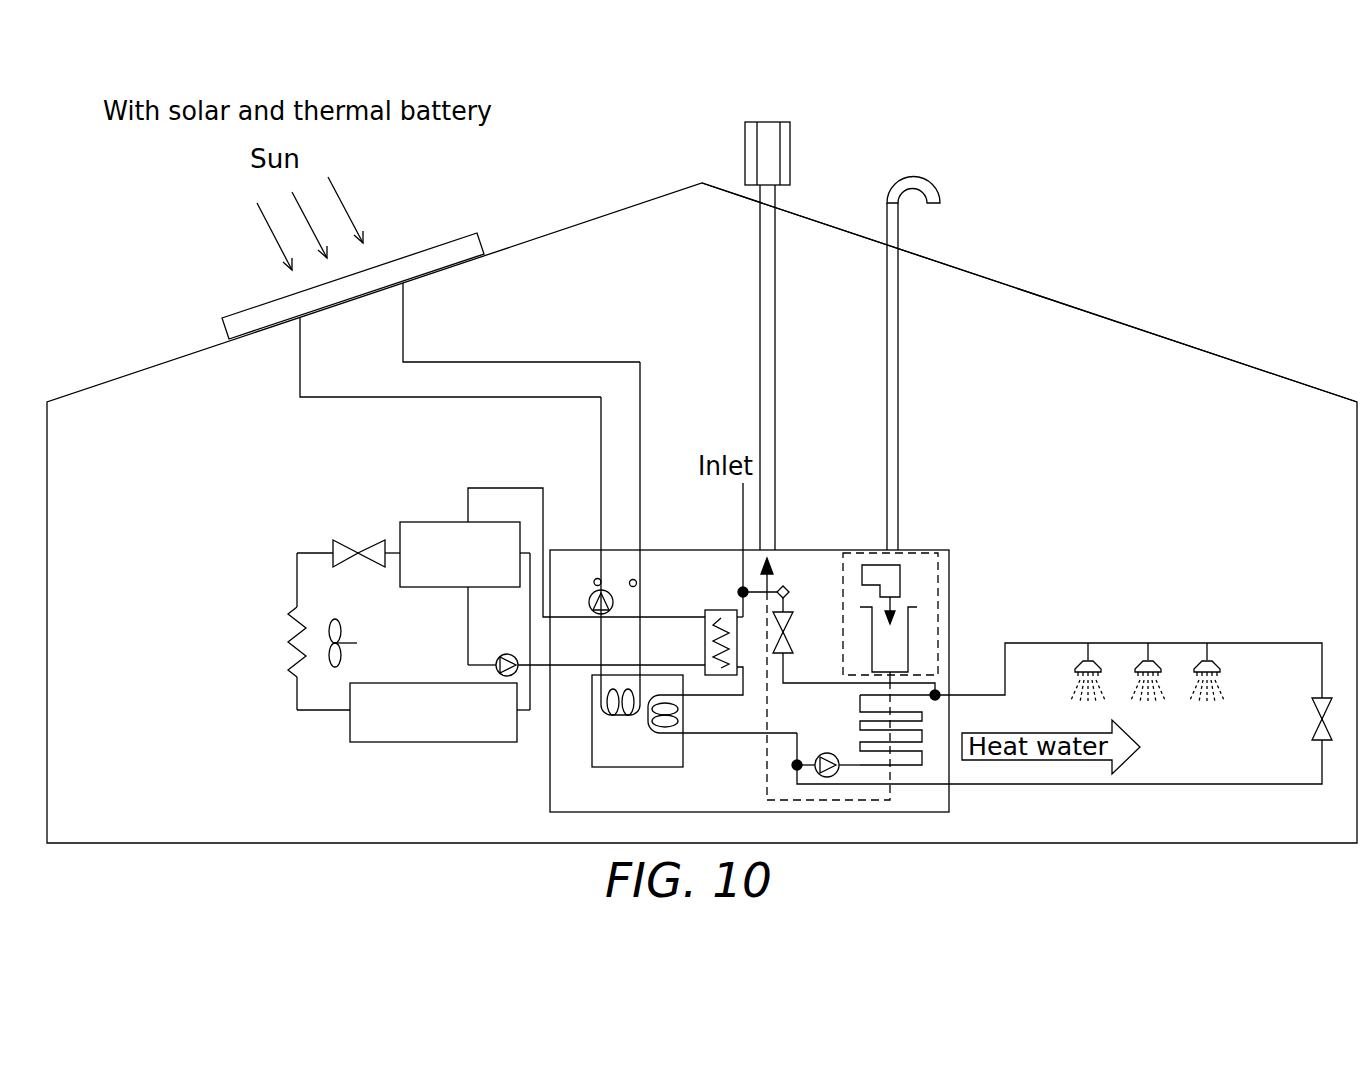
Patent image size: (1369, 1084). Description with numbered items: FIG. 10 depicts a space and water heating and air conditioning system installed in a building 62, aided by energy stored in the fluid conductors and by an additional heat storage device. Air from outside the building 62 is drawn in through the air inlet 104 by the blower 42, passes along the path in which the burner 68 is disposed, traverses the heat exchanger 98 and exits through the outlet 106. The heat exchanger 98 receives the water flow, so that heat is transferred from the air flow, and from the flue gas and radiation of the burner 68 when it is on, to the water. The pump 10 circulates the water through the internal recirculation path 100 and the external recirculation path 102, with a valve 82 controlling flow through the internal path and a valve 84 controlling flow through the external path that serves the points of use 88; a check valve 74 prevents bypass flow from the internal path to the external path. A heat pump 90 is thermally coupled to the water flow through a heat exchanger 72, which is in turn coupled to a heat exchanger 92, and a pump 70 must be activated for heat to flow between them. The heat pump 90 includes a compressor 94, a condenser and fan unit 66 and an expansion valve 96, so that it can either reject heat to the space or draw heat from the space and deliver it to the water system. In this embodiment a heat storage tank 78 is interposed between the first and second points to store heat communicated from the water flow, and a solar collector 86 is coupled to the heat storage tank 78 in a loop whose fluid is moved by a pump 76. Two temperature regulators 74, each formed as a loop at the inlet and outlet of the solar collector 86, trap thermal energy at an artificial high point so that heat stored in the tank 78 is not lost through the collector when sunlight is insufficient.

The pump 10 is at (819, 758).
The blower 42 is at (895, 597).
The building 62 is at (1270, 362).
The condenser and fan unit 66 is at (288, 665).
The burner 68 is at (917, 607).
The pump 70 is at (501, 660).
The heat exchanger 72 is at (725, 607).
The temperature regulator 74 is at (789, 594).
The pump 76 is at (590, 604).
The heat storage tank 78 is at (637, 758).
The valve 82 is at (793, 632).
The valve 84 is at (1312, 726).
The solar collector 86 is at (231, 311).
The point of use 88 is at (1227, 660).
The heat pump 90 is at (297, 567).
The heat exchanger 92 is at (432, 520).
The compressor 94 is at (425, 743).
The expansion valve 96 is at (370, 547).
The heat exchanger 98 is at (858, 723).
The internal recirculation path 100 is at (775, 590).
The external recirculation path 102 is at (1176, 784).
The air inlet 104 is at (899, 485).
The outlet 106 is at (760, 422).